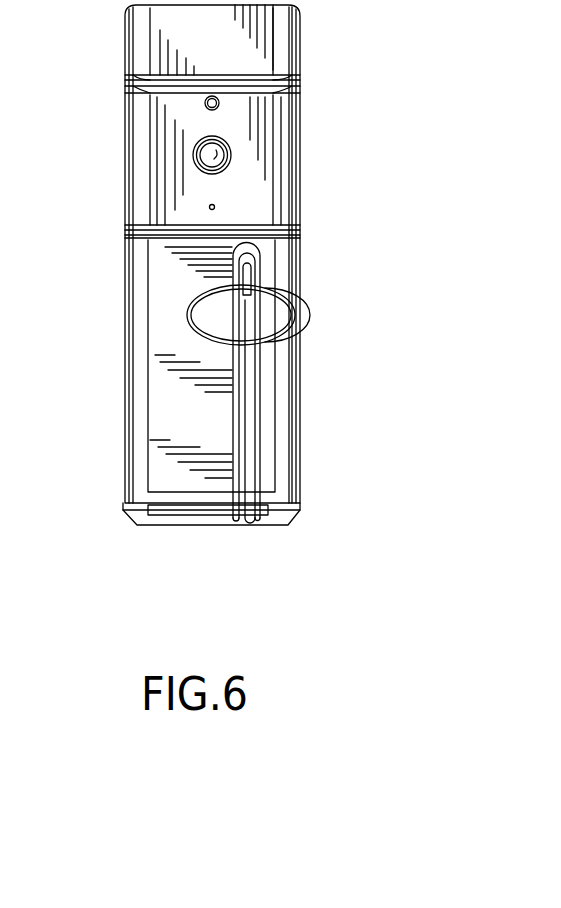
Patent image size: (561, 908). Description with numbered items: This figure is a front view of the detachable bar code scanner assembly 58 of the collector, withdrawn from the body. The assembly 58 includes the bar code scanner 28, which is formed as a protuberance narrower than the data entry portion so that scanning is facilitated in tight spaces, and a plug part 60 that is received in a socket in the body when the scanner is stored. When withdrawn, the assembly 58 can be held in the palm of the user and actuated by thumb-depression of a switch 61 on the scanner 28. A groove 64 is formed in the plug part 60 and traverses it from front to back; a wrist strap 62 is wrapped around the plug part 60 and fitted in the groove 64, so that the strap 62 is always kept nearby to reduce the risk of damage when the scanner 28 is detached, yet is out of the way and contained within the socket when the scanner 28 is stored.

The detachable bar code scanner 28 is at (313, 120).
The bar code scanner assembly 58 is at (440, 113).
The plug part 60 is at (298, 390).
The switch 61 is at (194, 152).
The wrist strap 62 is at (237, 275).
The groove 64 is at (223, 402).